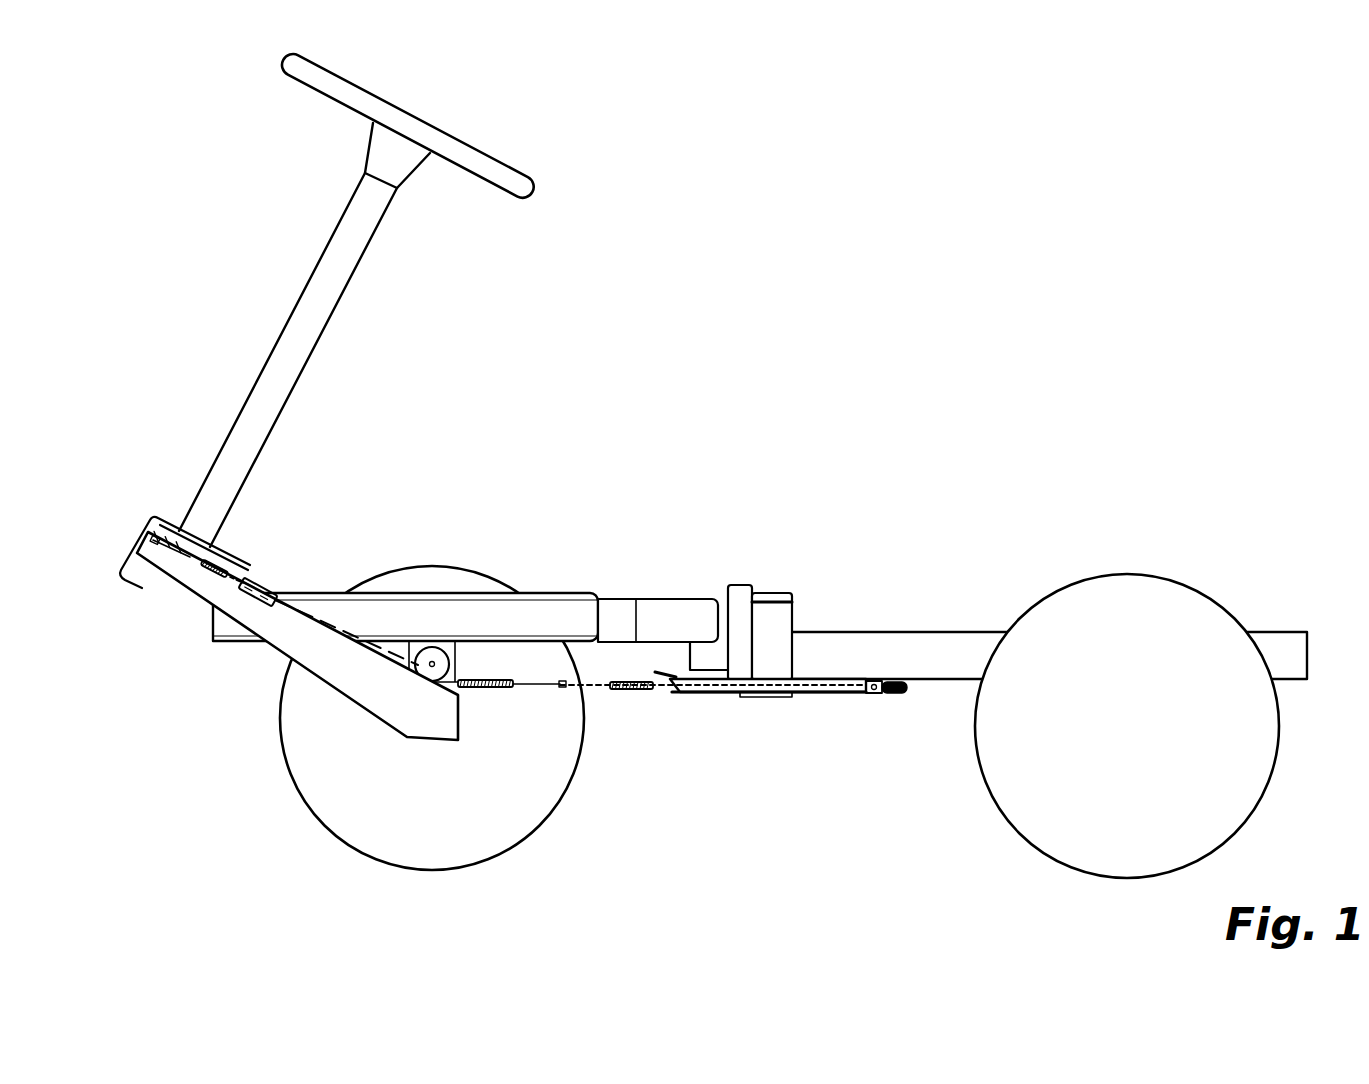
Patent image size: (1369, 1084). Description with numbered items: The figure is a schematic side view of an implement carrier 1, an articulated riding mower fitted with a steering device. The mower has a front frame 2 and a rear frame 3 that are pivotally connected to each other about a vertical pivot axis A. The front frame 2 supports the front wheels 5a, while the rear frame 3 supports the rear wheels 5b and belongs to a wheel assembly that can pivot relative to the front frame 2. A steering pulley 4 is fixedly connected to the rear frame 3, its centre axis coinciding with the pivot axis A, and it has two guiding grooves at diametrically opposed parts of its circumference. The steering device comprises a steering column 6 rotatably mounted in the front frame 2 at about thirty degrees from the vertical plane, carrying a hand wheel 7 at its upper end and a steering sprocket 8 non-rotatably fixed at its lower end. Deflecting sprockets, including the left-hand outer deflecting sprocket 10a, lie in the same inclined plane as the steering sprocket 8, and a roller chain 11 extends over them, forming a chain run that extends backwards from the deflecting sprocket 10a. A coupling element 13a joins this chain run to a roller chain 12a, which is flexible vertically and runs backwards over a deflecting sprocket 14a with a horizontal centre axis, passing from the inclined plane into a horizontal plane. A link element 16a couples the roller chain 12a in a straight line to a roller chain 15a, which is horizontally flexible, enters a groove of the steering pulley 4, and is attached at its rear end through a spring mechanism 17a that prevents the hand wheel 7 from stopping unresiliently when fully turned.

The implement carrier 1 is at (806, 438).
The front frame 2 is at (598, 665).
The rear frame 3 is at (903, 660).
The steering pulley 4 is at (840, 697).
The front wheels 5a is at (302, 710).
The rear wheels 5b is at (1015, 763).
The steering column 6 is at (277, 394).
The hand wheel 7 is at (496, 178).
The steering sprocket 8 is at (187, 565).
The deflecting sprocket 10a is at (160, 517).
The roller chain 11 is at (227, 562).
The roller chain 12a is at (487, 690).
The coupling element 13a is at (283, 592).
The deflecting sprocket 14a is at (443, 666).
The roller chain 15a is at (632, 695).
The link element 16a is at (562, 690).
The spring mechanism 17a is at (892, 694).
The pivot axis A is at (768, 608).